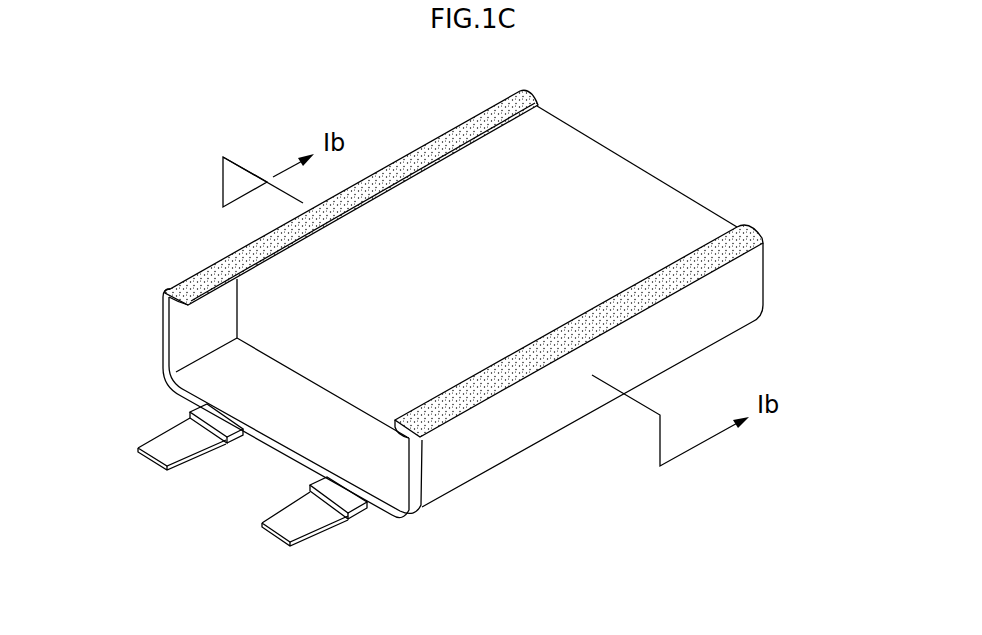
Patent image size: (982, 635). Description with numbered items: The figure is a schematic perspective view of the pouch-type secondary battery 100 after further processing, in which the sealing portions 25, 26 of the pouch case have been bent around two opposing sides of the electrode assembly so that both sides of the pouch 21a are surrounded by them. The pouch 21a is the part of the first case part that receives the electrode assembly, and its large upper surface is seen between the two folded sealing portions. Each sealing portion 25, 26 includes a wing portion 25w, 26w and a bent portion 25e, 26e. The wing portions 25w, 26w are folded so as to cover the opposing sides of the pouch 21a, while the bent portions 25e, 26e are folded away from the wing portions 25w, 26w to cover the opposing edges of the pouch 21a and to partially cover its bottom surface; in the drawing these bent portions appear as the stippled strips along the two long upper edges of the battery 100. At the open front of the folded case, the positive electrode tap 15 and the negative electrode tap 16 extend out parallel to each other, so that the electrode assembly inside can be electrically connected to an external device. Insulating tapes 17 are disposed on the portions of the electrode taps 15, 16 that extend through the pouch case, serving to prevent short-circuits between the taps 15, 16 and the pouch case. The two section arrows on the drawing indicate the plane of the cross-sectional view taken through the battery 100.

The pouch-type secondary battery 100 is at (118, 81).
The pouch 21a is at (612, 179).
The sealing portion 25 is at (95, 226).
The bent portion 25e is at (200, 282).
The wing portion 25w is at (163, 315).
The sealing portion 26 is at (846, 183).
The bent portion 26e is at (748, 235).
The wing portion 26w is at (750, 290).
The positive electrode tap 15 is at (165, 450).
The negative electrode tap 16 is at (287, 523).
The insulating tape 17 is at (320, 482).